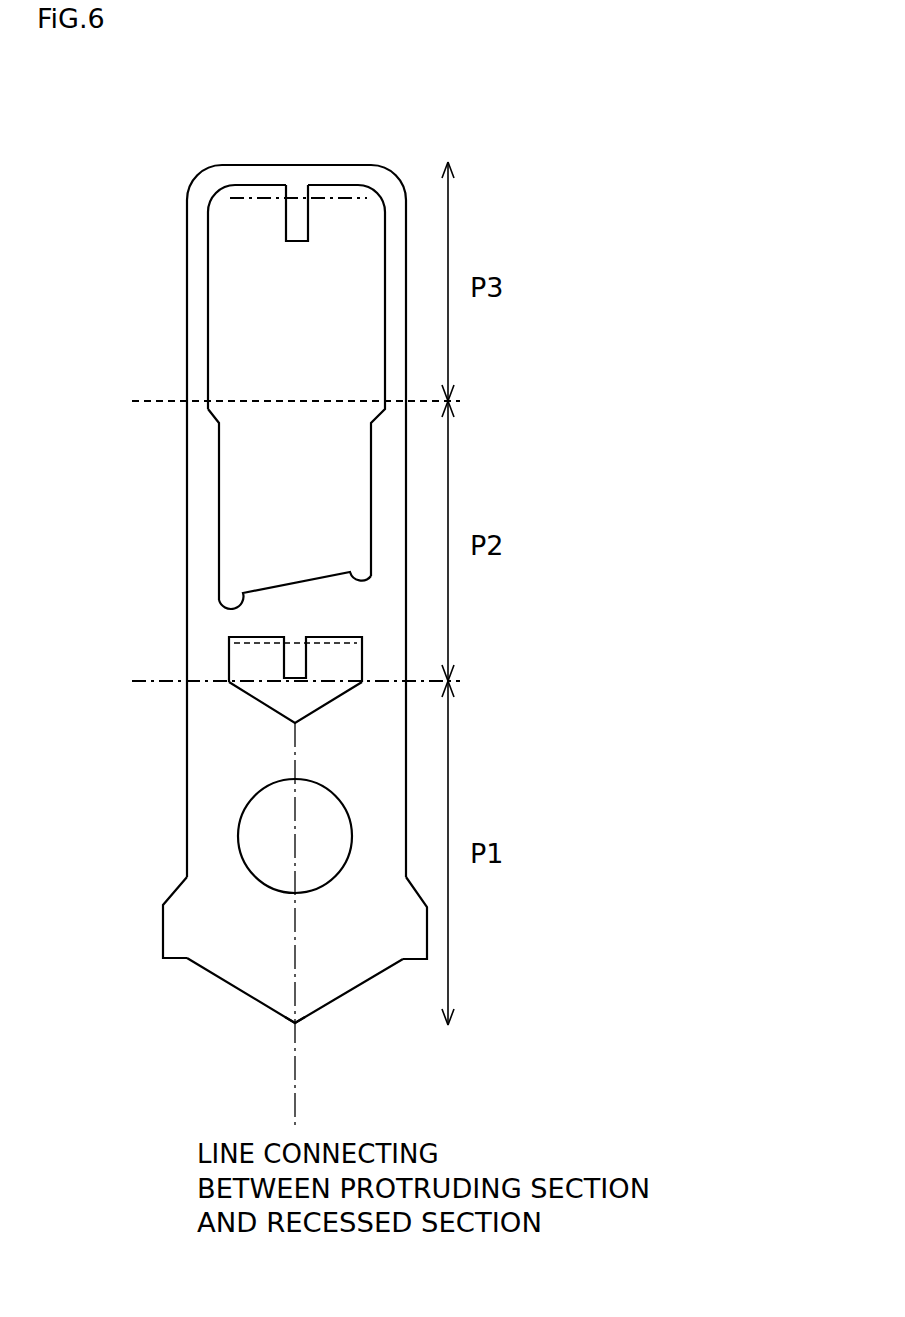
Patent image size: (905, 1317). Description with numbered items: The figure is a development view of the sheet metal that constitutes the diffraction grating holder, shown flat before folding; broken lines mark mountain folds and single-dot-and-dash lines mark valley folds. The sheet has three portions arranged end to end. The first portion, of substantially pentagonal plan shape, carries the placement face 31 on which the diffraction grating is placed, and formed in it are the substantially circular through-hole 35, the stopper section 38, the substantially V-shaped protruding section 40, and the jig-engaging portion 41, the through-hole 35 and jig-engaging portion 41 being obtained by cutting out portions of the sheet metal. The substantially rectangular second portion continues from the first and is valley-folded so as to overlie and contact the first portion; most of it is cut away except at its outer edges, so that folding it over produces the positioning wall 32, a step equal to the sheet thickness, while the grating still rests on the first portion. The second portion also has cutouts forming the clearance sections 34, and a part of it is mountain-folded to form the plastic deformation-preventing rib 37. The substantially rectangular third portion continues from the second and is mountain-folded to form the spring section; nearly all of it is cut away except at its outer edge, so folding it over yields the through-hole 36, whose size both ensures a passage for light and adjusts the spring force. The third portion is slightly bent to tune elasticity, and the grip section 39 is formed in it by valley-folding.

The placement face 31 is at (322, 953).
The positioning wall 32 is at (285, 585).
The clearance sections 34 is at (223, 603).
The through-hole 35 is at (265, 833).
The through-hole 36 is at (245, 315).
The plastic deformation-preventing rib 37 is at (288, 663).
The stopper section 38 is at (173, 932).
The grip section 39 is at (296, 233).
The protruding section 40 is at (263, 1035).
The jig-engaging portion 41 is at (286, 710).